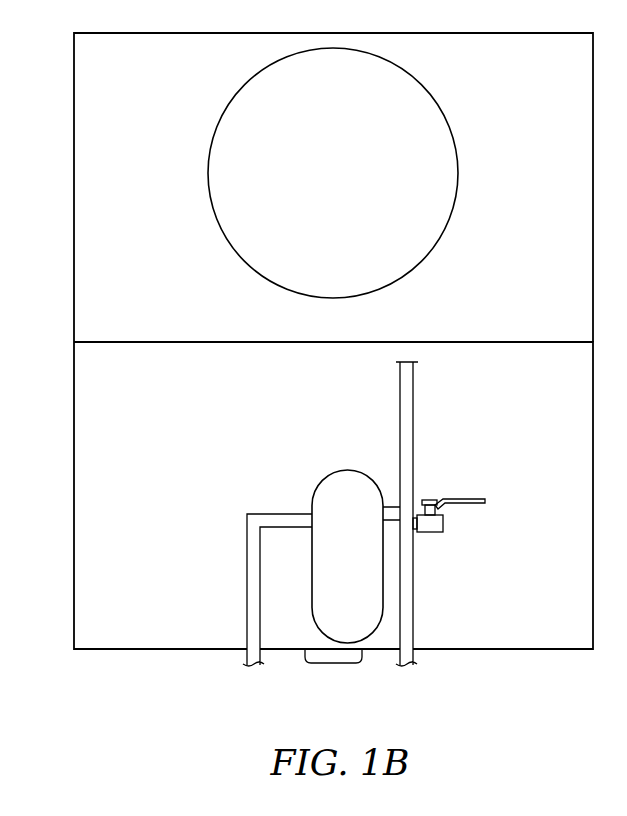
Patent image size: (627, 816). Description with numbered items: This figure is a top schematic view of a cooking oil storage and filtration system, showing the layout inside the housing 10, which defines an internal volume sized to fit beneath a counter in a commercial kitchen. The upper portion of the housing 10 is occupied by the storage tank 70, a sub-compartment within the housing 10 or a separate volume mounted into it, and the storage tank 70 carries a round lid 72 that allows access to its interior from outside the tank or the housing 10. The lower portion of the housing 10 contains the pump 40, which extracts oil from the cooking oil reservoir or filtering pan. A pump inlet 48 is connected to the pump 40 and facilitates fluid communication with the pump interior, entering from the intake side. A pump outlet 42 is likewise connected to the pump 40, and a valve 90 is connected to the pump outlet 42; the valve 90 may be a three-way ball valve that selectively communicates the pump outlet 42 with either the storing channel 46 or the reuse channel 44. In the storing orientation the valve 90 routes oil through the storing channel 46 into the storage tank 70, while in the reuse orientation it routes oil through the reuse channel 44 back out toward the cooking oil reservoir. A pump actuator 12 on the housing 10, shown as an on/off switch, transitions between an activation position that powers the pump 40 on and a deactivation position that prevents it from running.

The housing 10 is at (85, 507).
The pump actuator 12 is at (305, 652).
The pump 40 is at (325, 478).
The pump outlet 42 is at (388, 505).
The reuse channel 44 is at (414, 582).
The storing channel 46 is at (415, 393).
The pump inlet 48 is at (247, 583).
The storage tank 70 is at (87, 203).
The lid 72 is at (438, 102).
The valve 90 is at (443, 525).